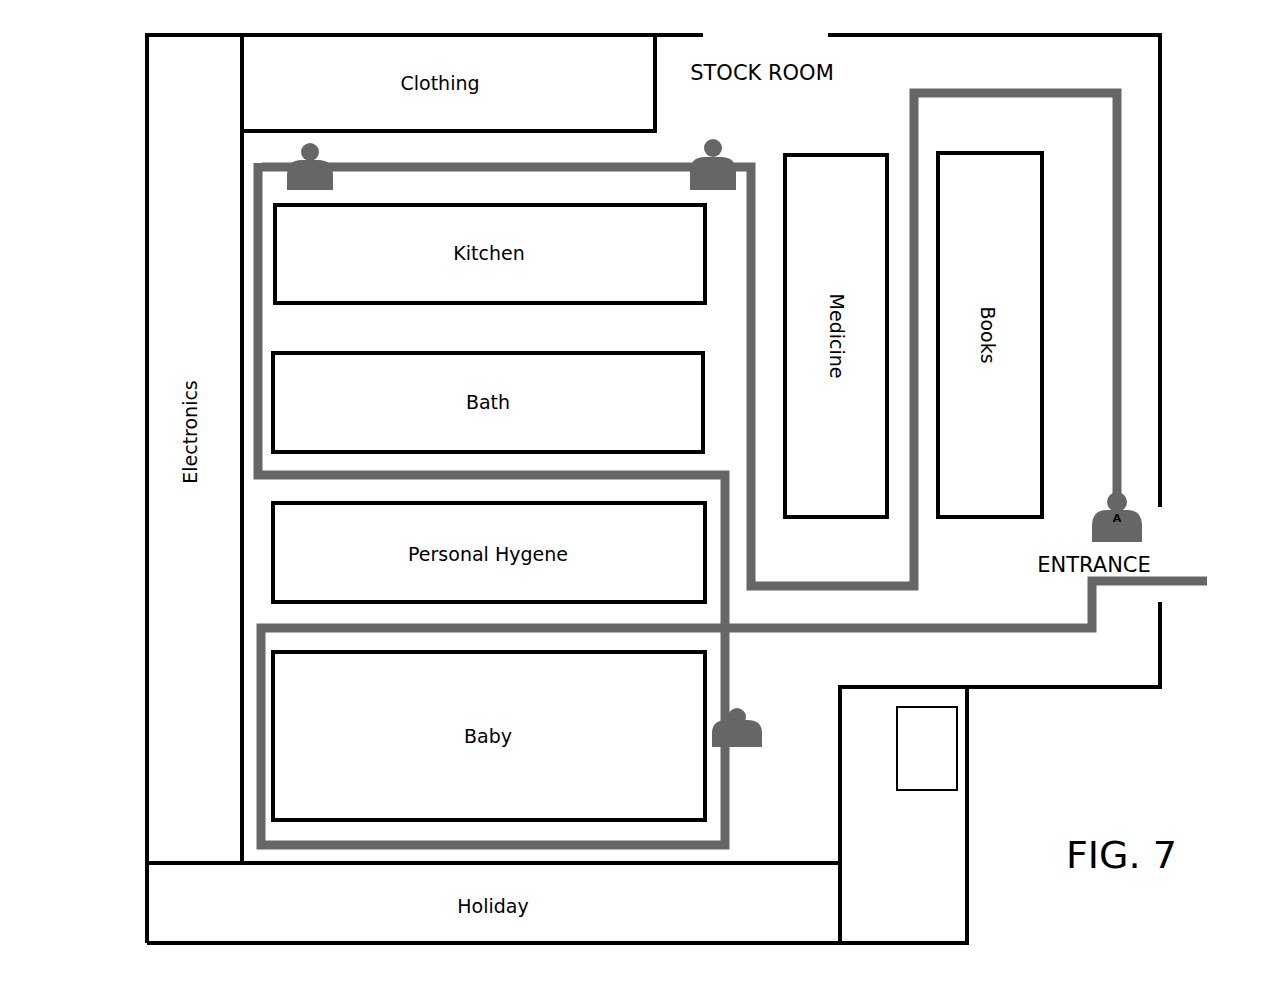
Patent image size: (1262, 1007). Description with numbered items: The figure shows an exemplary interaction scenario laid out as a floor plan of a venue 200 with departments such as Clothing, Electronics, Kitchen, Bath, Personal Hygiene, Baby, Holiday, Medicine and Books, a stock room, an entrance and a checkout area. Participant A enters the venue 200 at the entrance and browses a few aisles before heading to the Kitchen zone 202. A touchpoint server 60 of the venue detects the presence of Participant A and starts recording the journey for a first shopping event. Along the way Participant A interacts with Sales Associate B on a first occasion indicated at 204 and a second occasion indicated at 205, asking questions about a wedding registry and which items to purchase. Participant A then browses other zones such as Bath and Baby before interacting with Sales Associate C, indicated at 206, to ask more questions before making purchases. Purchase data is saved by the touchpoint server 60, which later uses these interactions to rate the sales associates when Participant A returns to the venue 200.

The venue 200 is at (1166, 238).
The Kitchen zone 202 is at (614, 269).
The first occasion of interaction with Sales Associate B 204 is at (734, 167).
The second occasion of interaction with Sales Associate B 205 is at (289, 179).
The interaction with Sales Associate C 206 is at (747, 707).
The touchpoint server 60 is at (945, 755).